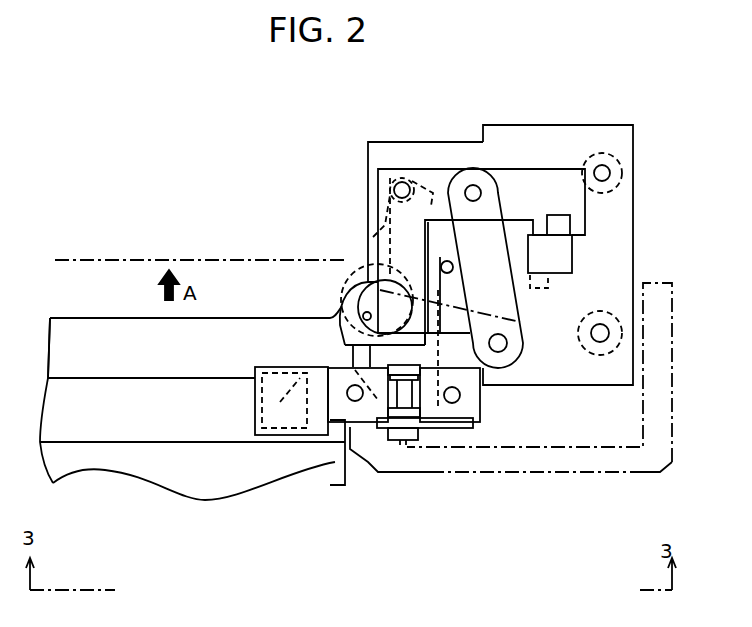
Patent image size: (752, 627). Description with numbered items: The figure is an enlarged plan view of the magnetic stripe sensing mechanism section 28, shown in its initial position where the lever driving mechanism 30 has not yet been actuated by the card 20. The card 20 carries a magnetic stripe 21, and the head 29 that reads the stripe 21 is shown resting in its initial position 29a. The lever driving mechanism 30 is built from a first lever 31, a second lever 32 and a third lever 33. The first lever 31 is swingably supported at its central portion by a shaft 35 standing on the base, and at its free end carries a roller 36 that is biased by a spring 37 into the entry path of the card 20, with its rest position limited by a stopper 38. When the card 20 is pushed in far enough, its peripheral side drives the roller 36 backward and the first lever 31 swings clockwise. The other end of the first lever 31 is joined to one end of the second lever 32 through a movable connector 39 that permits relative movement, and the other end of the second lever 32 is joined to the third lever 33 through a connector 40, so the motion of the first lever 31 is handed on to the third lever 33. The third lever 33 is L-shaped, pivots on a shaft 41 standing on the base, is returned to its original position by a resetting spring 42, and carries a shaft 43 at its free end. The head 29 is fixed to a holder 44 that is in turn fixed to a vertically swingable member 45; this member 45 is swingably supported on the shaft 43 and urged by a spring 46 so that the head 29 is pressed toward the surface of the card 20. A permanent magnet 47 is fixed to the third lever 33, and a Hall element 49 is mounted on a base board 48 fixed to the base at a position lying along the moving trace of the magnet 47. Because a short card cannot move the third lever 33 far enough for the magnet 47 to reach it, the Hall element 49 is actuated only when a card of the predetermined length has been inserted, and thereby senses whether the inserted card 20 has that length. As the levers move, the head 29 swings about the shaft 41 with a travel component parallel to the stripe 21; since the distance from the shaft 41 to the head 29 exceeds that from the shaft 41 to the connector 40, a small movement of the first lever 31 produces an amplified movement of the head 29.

The card 20 is at (118, 332).
The stripe 21 is at (90, 388).
The magnetic stripe sensing mechanism section 28 is at (250, 179).
The head 29 is at (277, 437).
The position 29a is at (280, 402).
The lever driving mechanism 30 is at (355, 162).
The first lever 31 is at (530, 335).
The second lever 32 is at (520, 322).
The third lever 33 is at (437, 175).
The shaft 35 is at (437, 410).
The roller 36 is at (341, 313).
The spring 37 is at (440, 290).
The stopper 38 is at (362, 428).
The movable connector 39 is at (502, 350).
The connector 40 is at (474, 185).
The shaft 41 is at (400, 182).
The resetting spring 42 is at (373, 237).
The shaft 43 is at (401, 444).
The holder 44 is at (322, 437).
The vertically swingable member 45 is at (474, 423).
The spring 46 is at (364, 430).
The permanent magnet 47 is at (565, 227).
The base board 48 is at (625, 145).
The Hall element 49 is at (565, 257).